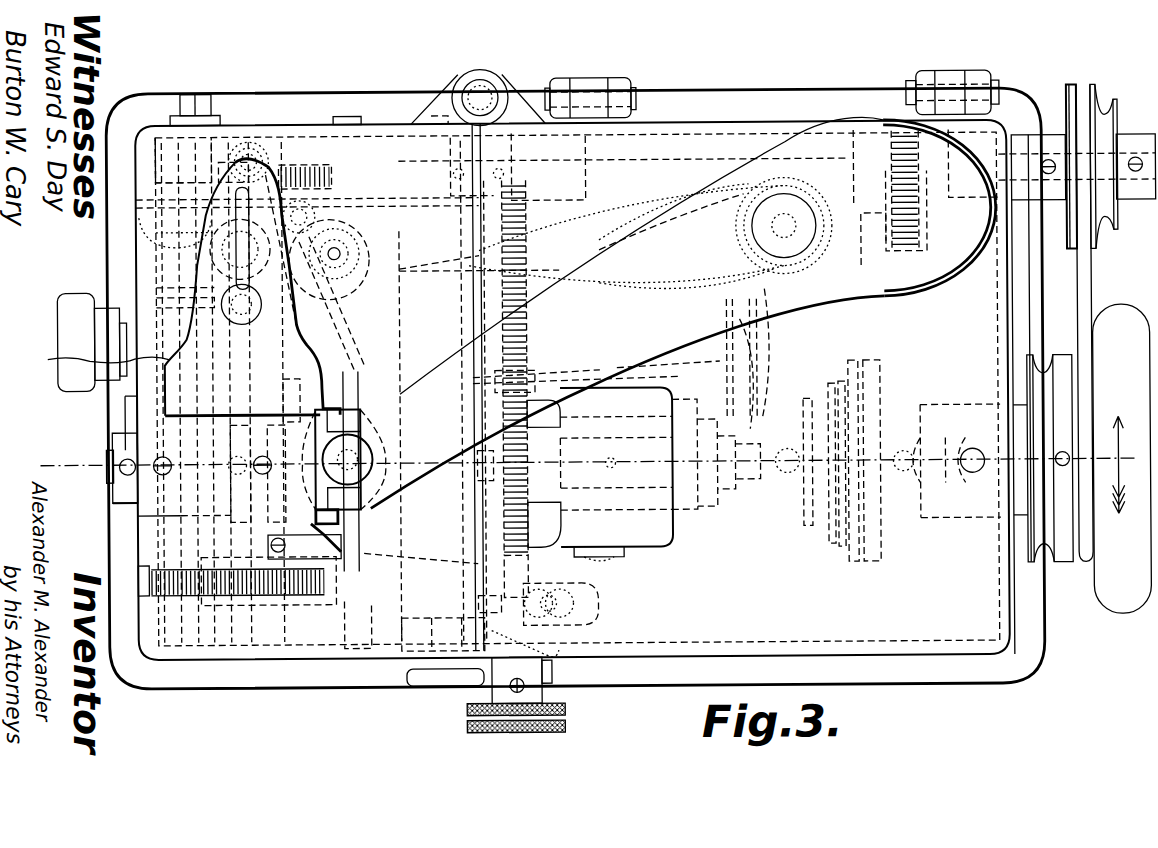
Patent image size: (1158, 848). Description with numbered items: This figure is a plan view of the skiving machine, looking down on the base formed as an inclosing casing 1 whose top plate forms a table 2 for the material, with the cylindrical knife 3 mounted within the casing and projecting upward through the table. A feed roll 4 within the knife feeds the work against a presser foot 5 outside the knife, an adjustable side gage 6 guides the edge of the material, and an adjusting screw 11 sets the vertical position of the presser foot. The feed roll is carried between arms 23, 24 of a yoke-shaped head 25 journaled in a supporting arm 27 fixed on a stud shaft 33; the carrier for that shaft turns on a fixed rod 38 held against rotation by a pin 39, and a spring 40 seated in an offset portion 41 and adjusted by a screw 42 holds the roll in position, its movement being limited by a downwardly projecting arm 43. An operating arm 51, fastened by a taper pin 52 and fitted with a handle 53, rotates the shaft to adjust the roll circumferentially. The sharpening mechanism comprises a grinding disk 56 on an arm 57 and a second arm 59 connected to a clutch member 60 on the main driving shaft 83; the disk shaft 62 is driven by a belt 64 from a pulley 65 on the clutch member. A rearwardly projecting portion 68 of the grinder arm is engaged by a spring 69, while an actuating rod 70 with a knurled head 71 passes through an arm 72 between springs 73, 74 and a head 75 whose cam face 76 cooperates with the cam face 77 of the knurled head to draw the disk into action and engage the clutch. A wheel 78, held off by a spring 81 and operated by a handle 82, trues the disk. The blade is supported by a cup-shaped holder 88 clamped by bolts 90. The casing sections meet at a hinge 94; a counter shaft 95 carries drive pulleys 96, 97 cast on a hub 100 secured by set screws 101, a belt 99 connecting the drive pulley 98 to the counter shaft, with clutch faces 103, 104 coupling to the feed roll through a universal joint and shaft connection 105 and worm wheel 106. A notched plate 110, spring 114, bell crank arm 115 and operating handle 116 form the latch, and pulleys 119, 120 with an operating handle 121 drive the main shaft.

The casing 1 is at (708, 662).
The table 2 is at (660, 652).
The cylindrical knife 3 is at (345, 658).
The feed roll 4 is at (372, 520).
The presser foot 5 is at (592, 468).
The adjustable side gage 6 is at (97, 358).
The adjusting screw 11 is at (368, 458).
The arm of yoke-shaped head 23 is at (280, 382).
The arm of yoke-shaped head 24 is at (370, 553).
The yoke-shaped head 25 is at (287, 480).
The supporting arm 27 is at (243, 493).
The stud shaft 33 is at (106, 478).
The fixed rod 38 is at (137, 514).
The pin 39 is at (168, 176).
The spring 40 is at (260, 583).
The offset portion 41 is at (314, 600).
The screw 42 is at (140, 567).
The downwardly projecting arm 43 is at (170, 292).
The operating arm 51 is at (125, 396).
The taper pin 52 is at (124, 460).
The handle 53 is at (68, 372).
The grinding disk 56 is at (365, 252).
The arm 57 is at (610, 278).
The second arm 59 is at (782, 357).
The clutch member 60 is at (835, 400).
The shaft 62 is at (313, 330).
The belt 64 is at (417, 273).
The pulley 65 is at (818, 540).
The rearwardly projecting portion 68 is at (862, 250).
The spring 69 is at (912, 205).
The actuating rod 70 is at (530, 365).
The knurled head 71 is at (530, 732).
The arm 72 is at (638, 375).
The spring 73 is at (528, 345).
The spring 74 is at (530, 568).
The head 75 is at (477, 603).
The cam face 76 is at (565, 660).
The cam face 77 is at (480, 660).
The wheel 78 is at (265, 312).
The spring 81 is at (276, 150).
The handle 82 is at (150, 235).
The main driving shaft 83 is at (678, 512).
The cup-shaped holder 88 is at (368, 650).
The bolts 90 is at (500, 315).
The hinge 94 is at (482, 90).
The counter shaft 95 is at (660, 160).
The drive pulley 96 is at (1100, 118).
The drive pulley 97 is at (1103, 117).
The drive pulley 98 is at (1070, 567).
The belt 99 is at (1090, 298).
The hub 100 is at (1137, 145).
The set screws 101 is at (1050, 163).
The clutch face 103 is at (462, 160).
The clutch face 104 is at (507, 162).
The universal joint and shaft connection 105 is at (243, 364).
The worm wheel 106 is at (318, 165).
The notched plate 110 is at (415, 618).
The spring 114 is at (580, 600).
The arm of bell crank 115 is at (600, 618).
The operating handle 116 is at (430, 680).
The pulley 119 is at (880, 540).
The pulley 120 is at (1028, 548).
The operating handle 121 is at (1122, 590).